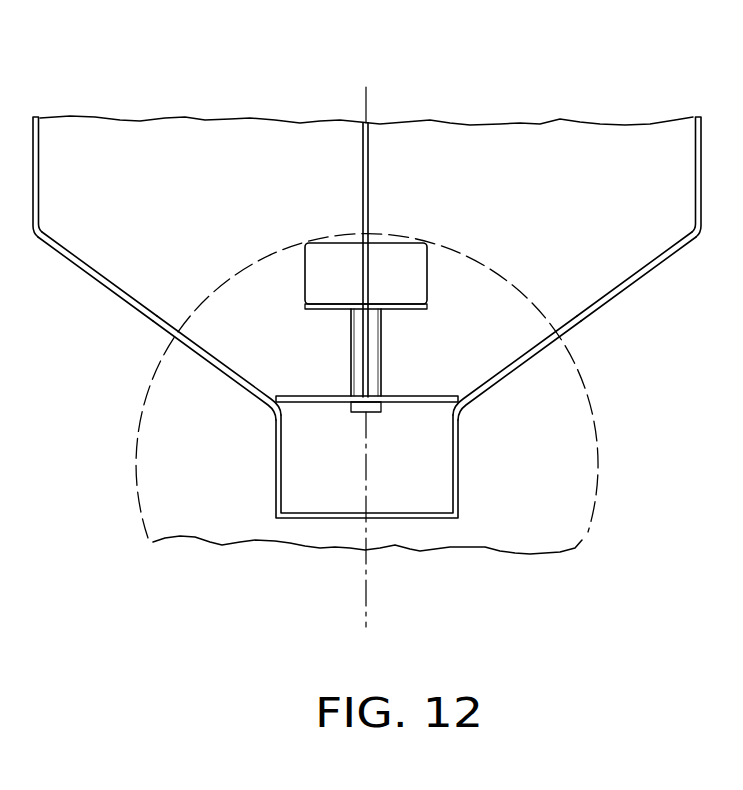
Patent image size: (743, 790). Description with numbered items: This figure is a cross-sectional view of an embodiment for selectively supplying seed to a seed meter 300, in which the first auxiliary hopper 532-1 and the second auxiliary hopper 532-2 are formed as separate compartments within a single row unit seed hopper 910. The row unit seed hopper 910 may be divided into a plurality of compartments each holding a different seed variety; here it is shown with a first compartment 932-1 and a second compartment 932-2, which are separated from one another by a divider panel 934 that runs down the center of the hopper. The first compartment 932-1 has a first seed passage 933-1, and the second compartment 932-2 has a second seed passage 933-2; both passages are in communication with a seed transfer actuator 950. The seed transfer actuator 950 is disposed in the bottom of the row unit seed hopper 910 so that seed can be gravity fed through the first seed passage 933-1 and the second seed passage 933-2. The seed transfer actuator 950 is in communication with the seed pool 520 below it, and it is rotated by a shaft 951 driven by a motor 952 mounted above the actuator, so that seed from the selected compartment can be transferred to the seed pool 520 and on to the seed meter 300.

The first auxiliary hopper 532-1 is at (357, 137).
The first compartment 932-1 is at (208, 142).
The second auxiliary hopper 532-2 is at (629, 145).
The second compartment 932-2 is at (523, 145).
The row unit seed hopper 910 is at (628, 288).
The first seed passage 933-1 is at (310, 390).
The second seed passage 933-2 is at (442, 372).
The seed pool 520 is at (407, 482).
The seed transfer actuator 950 is at (325, 398).
The shaft 951 is at (360, 342).
The motor 952 is at (330, 258).
The divider panel 934 is at (363, 137).
The seed meter 300 is at (560, 503).